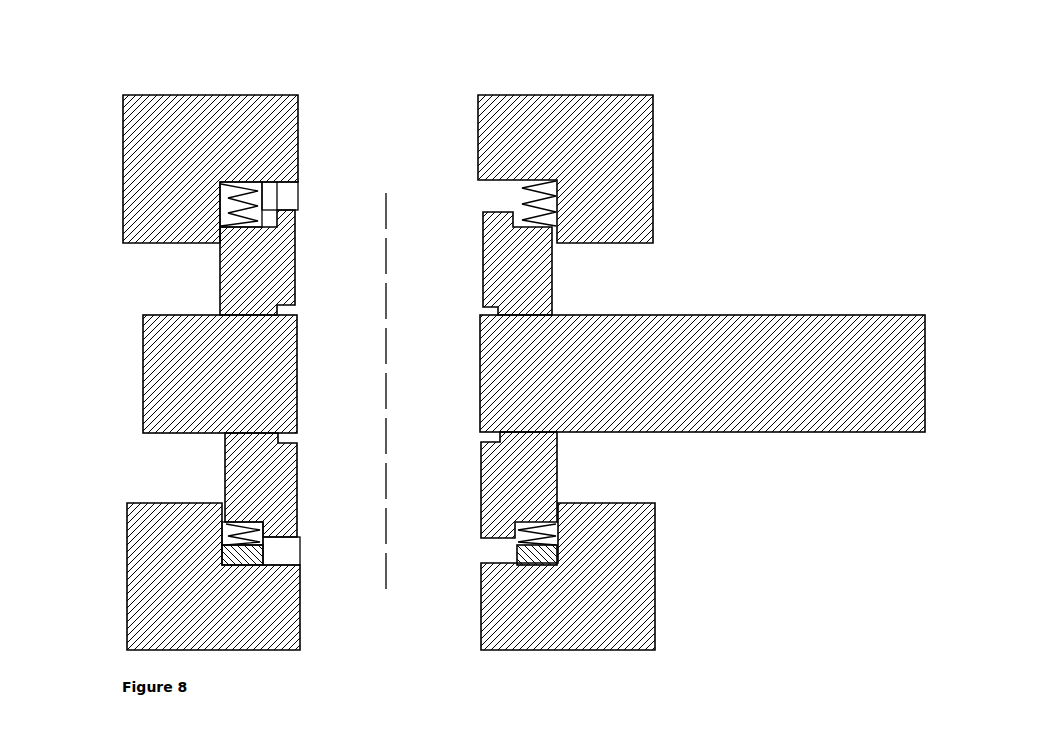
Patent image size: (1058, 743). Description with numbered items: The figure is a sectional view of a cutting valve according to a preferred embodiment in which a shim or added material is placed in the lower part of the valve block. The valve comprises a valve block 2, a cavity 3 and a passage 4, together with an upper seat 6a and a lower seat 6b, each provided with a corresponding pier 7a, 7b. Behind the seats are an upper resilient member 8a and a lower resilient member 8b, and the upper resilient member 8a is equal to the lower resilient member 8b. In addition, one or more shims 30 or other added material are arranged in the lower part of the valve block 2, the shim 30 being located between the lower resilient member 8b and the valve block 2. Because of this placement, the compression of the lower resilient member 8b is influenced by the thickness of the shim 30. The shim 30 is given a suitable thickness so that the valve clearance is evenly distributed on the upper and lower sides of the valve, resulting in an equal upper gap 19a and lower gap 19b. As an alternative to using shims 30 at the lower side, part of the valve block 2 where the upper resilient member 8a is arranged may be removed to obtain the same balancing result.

The valve block 2 is at (190, 115).
The cavity 3 is at (648, 272).
The passage 4 is at (398, 157).
The upper seat 6a is at (220, 278).
The lower seat 6b is at (225, 482).
The upper pier 7a is at (225, 190).
The lower pier 7b is at (255, 555).
The upper resilient member 8a is at (285, 200).
The lower resilient member 8b is at (225, 537).
The upper gap 19a is at (278, 195).
The lower gap 19b is at (292, 572).
The shim 30 is at (255, 560).